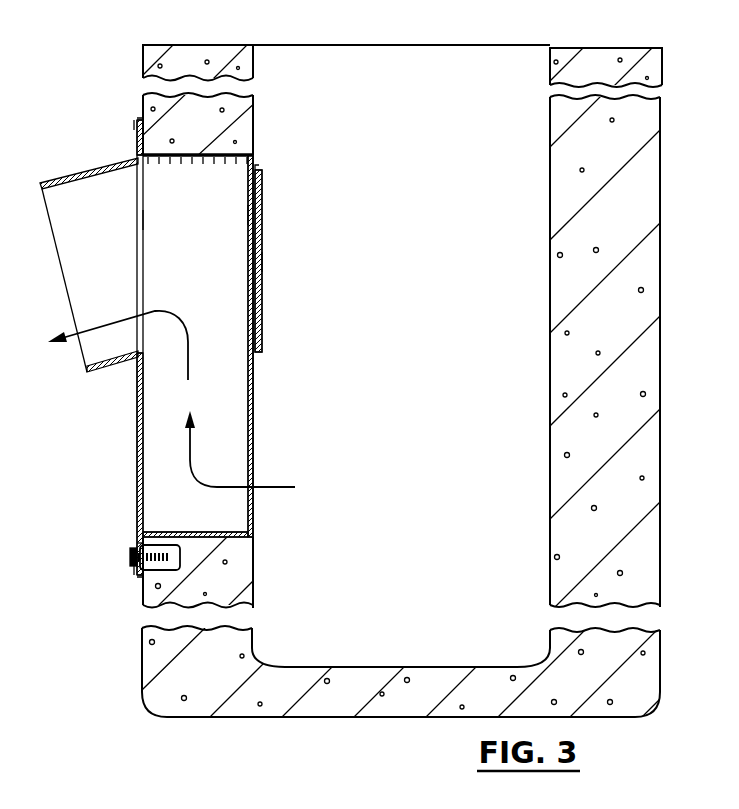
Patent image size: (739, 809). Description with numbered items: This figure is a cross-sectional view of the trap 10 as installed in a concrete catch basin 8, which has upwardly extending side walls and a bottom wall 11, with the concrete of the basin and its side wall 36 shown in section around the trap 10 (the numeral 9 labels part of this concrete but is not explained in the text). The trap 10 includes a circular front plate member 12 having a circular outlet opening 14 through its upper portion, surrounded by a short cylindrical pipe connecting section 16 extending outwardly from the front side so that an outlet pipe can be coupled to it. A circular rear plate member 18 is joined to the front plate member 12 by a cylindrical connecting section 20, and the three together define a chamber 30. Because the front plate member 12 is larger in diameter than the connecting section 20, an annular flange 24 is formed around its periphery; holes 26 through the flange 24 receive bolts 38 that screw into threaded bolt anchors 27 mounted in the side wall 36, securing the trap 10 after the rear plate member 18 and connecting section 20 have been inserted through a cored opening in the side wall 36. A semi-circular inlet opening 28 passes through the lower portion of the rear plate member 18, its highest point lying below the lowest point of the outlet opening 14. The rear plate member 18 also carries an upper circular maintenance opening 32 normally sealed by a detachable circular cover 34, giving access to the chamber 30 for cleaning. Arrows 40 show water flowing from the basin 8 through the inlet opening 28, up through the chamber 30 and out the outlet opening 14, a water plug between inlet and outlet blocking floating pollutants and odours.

The concrete catch basin 8 is at (637, 50).
The concrete side wall 9 is at (650, 364).
The trap 10 is at (300, 157).
The bottom wall 11 is at (372, 665).
The front plate member 12 is at (137, 432).
The outlet opening 14 is at (143, 220).
The pipe connecting section 16 is at (82, 175).
The rear plate member 18 is at (255, 387).
The cylindrical connecting section 20 is at (253, 147).
The annular flange 24 is at (137, 137).
The holes 26 is at (137, 543).
The bolt anchors 27 is at (180, 554).
The inlet opening 28 is at (255, 462).
The chamber 30 is at (230, 295).
The maintenance opening 32 is at (248, 215).
The circular cover 34 is at (260, 262).
The side wall 36 is at (238, 108).
The bolts 38 is at (128, 553).
The arrows 40 is at (190, 378).